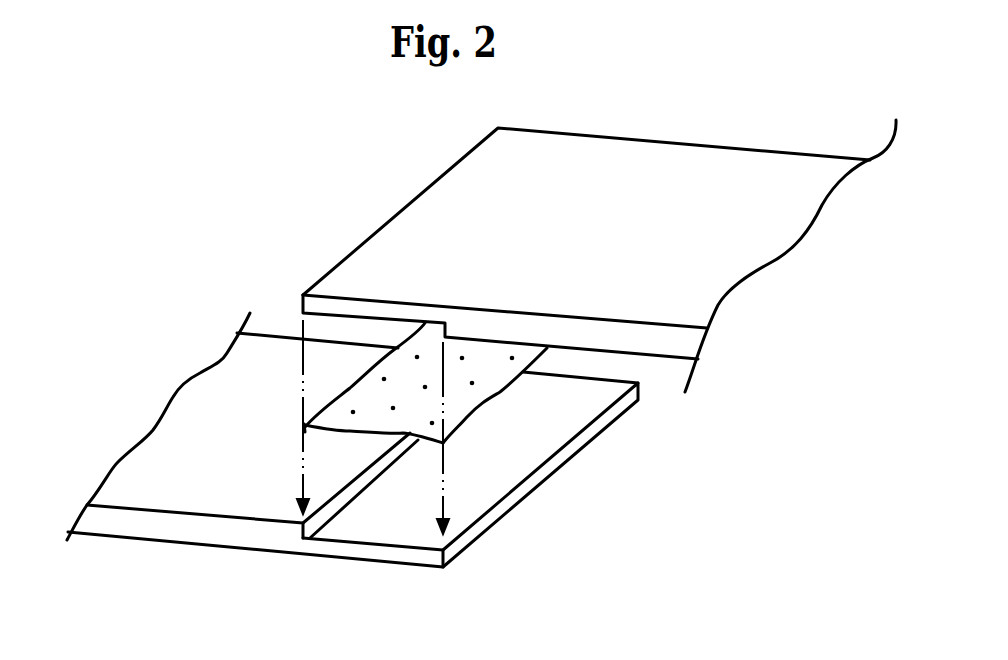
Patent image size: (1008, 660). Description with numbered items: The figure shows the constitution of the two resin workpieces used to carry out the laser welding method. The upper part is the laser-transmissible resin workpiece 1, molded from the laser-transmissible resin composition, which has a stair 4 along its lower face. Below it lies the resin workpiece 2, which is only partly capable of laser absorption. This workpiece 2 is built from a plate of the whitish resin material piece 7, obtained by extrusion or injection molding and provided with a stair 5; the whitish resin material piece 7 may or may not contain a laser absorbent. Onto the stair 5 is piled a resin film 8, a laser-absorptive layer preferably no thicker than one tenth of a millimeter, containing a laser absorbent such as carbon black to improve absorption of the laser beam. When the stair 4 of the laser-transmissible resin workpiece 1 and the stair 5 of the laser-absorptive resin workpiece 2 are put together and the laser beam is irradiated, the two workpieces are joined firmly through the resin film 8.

The laser-transmissible resin workpiece 1 is at (599, 231).
The stair 4 is at (378, 310).
The resin workpiece 2 is at (295, 426).
The whitish resin material piece 7 is at (228, 455).
The resin film 8 is at (373, 395).
The stair 5 is at (357, 553).